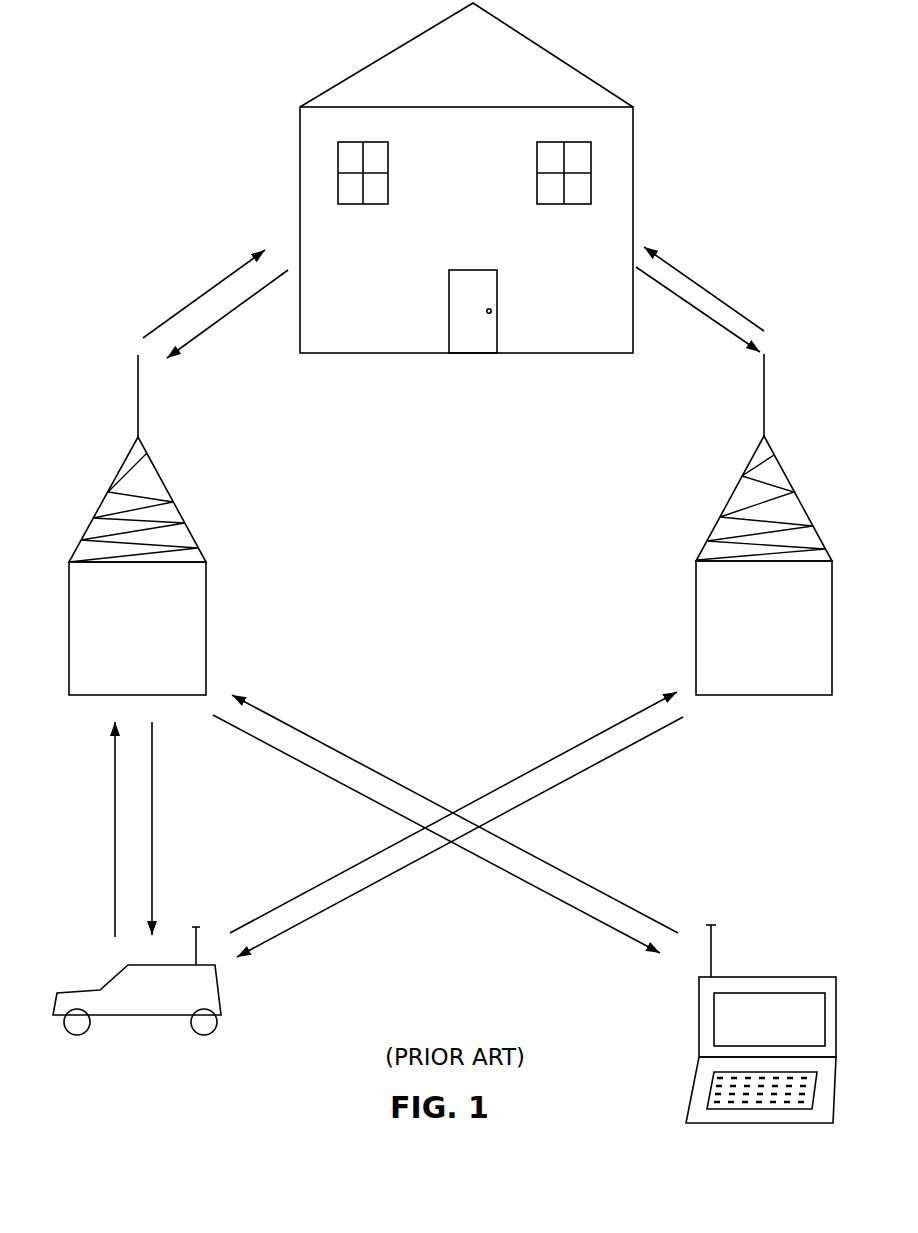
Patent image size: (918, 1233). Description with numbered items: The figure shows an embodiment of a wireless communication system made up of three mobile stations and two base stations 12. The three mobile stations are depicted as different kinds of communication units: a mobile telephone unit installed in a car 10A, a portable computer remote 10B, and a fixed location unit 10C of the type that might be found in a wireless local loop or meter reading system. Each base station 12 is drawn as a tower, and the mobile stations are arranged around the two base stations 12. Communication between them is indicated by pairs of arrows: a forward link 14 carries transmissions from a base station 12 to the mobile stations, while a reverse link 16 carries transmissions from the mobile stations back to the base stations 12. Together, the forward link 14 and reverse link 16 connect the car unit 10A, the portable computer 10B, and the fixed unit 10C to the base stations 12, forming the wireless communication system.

The mobile telephone unit installed in a car 10A is at (78, 988).
The portable computer remote 10B is at (811, 977).
The fixed location unit 10C is at (550, 54).
The base station 12 is at (108, 492).
The forward link 14 is at (222, 280).
The reverse link 16 is at (240, 307).